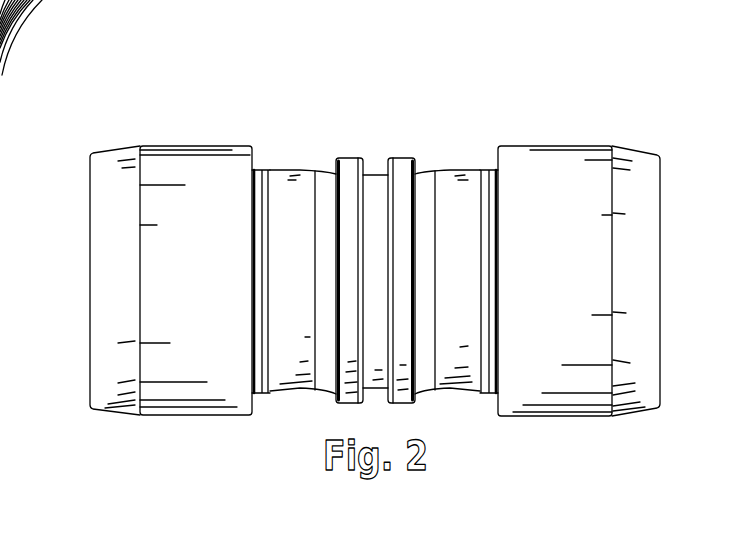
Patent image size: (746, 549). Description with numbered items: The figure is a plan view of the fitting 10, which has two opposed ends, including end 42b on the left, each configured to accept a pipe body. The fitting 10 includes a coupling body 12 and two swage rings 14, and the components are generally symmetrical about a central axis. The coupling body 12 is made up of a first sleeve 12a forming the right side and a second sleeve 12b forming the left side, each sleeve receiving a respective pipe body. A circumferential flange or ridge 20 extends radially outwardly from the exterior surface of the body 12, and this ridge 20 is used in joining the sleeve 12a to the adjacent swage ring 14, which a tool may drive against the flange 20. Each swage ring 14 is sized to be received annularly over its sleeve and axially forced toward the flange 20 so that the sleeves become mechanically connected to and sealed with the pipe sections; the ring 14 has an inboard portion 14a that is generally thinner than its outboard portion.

The fitting 10 is at (394, 98).
The coupling body 12 is at (283, 195).
The first sleeve 12a is at (608, 134).
The second sleeve 12b is at (149, 132).
The swage ring 14 is at (183, 372).
The inboard portion 14a is at (662, 178).
The circumferential flange or ridge 20 is at (348, 173).
The end 42b is at (88, 212).